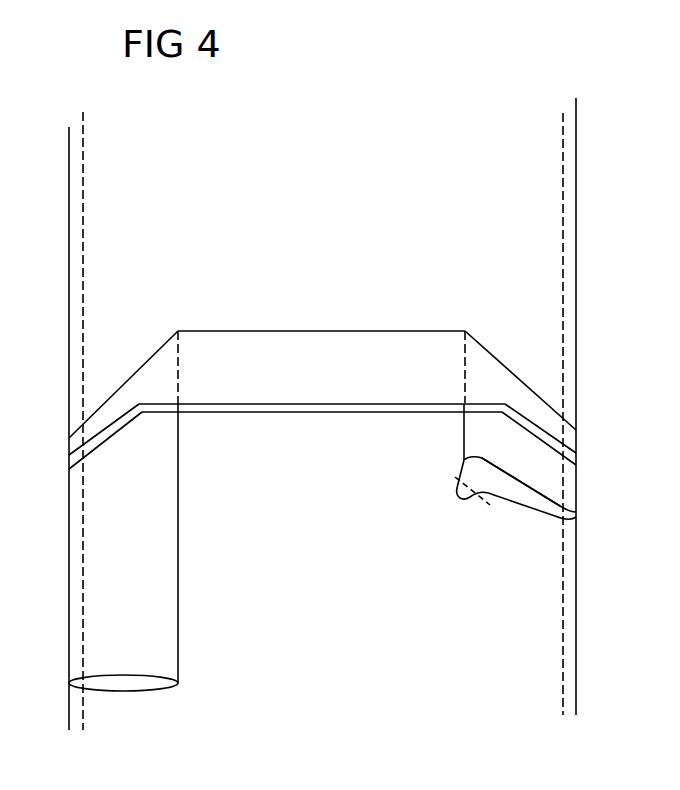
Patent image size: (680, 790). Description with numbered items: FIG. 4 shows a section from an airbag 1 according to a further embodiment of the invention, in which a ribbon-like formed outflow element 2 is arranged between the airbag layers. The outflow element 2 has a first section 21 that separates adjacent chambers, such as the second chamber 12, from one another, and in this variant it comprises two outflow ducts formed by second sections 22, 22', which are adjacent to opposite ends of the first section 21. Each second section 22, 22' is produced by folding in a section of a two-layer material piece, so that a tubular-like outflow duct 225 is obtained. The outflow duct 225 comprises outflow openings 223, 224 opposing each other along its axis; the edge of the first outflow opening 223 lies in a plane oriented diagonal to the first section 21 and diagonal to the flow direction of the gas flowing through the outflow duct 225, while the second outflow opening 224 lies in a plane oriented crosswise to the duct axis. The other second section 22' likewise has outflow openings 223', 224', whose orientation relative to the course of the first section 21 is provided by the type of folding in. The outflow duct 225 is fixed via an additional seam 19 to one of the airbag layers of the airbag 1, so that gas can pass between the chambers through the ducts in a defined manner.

The airbag 1 is at (517, 125).
The second chamber 12 is at (543, 615).
The outflow element 2 is at (326, 320).
The first section 21 is at (246, 352).
The first outflow opening 223 is at (520, 383).
The first outflow opening 223' is at (123, 384).
The second section 22 is at (411, 432).
The second section 22' is at (204, 543).
The second outflow opening 224 is at (516, 516).
The second outflow opening 224' is at (126, 708).
The outflow duct 225 is at (546, 470).
The additional seam 19 is at (450, 470).